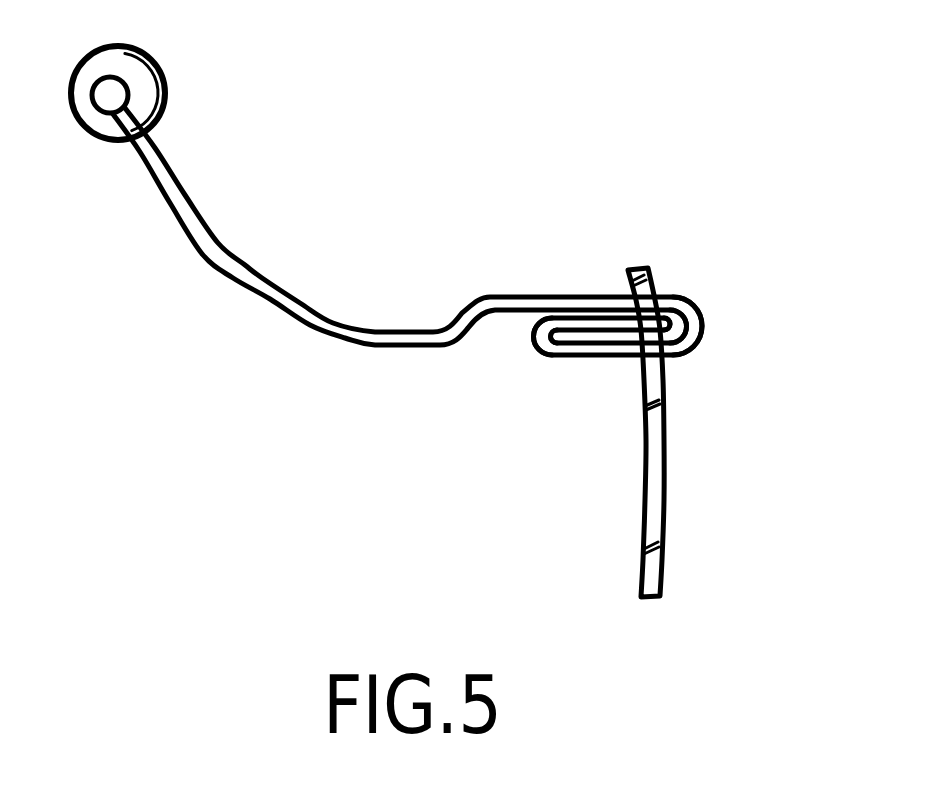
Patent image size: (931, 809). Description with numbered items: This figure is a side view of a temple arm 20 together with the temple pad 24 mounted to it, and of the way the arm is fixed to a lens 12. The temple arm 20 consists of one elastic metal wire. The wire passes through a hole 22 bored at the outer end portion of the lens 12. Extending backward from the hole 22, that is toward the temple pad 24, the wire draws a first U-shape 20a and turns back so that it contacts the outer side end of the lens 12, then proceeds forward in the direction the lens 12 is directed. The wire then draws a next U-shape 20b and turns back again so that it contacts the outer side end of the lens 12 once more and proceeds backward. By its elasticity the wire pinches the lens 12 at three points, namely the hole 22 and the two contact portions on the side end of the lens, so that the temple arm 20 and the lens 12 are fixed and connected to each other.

The lens 12 is at (653, 495).
The temple arm 20 is at (233, 252).
The first U-shape 20a is at (545, 337).
The next U-shape 20b is at (703, 330).
The hole 22 is at (679, 294).
The temple pad 24 is at (80, 118).